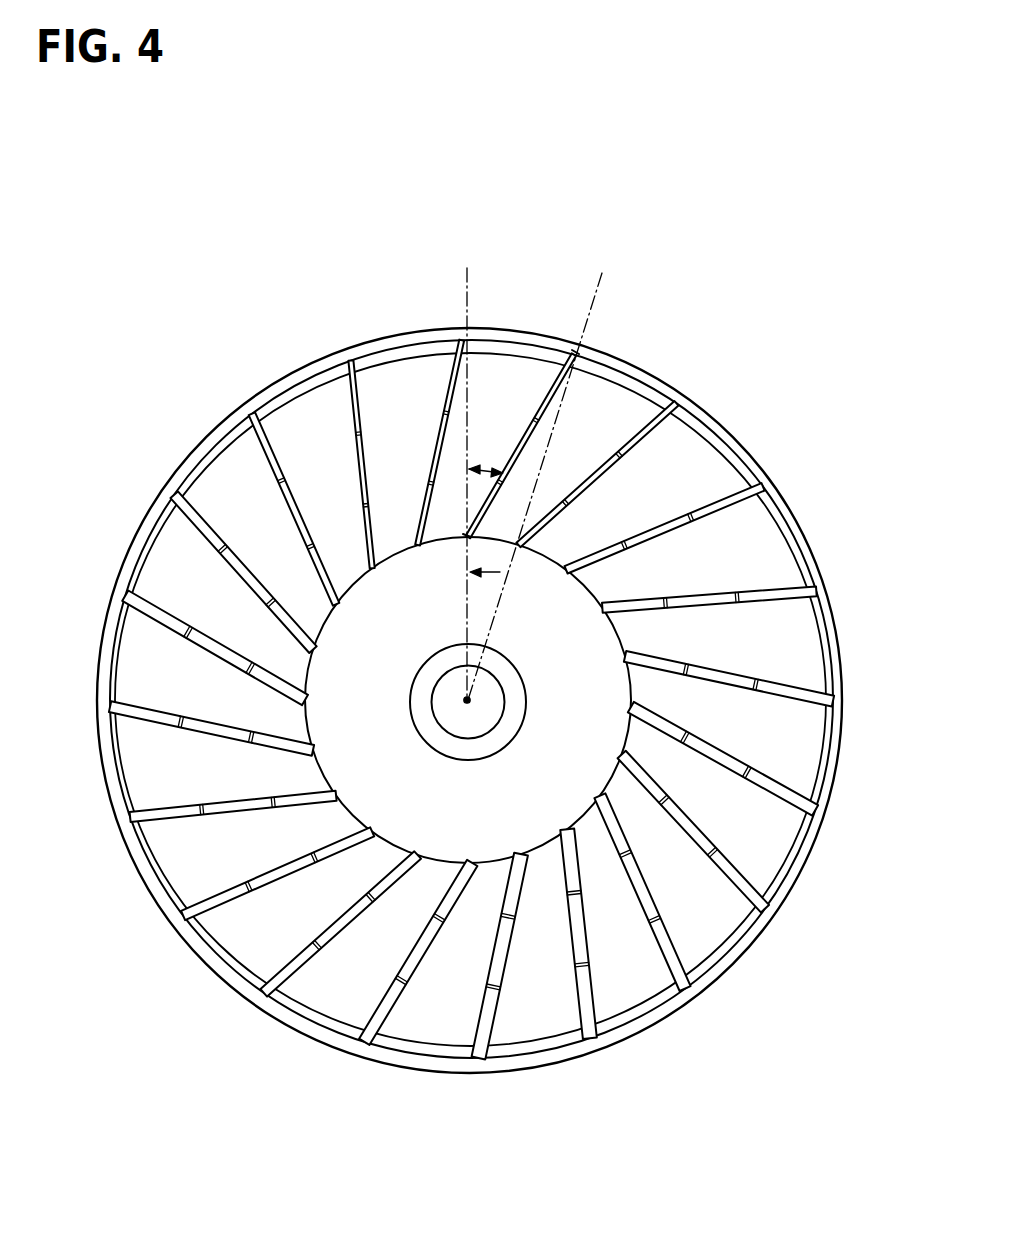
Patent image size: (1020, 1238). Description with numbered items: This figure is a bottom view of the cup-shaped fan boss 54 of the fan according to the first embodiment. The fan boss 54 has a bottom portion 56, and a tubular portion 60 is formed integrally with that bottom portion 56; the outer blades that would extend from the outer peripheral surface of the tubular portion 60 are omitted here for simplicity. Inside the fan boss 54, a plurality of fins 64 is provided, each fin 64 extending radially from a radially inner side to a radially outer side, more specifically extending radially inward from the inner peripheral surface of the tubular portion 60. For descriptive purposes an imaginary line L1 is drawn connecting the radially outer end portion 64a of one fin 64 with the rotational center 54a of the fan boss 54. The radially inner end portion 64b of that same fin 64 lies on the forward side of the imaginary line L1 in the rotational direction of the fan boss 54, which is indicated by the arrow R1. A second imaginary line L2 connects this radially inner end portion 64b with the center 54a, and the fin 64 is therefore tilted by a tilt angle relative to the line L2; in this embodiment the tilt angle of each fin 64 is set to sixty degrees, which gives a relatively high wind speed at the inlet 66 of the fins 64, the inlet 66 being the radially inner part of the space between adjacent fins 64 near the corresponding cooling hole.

The fan boss 54 is at (227, 414).
The rotational center 54a is at (466, 704).
The bottom portion 56 is at (693, 468).
The tubular portion 60 is at (717, 418).
The fin 64 is at (586, 377).
The radially outer end portion 64a is at (578, 356).
The radially inner end portion 64b is at (464, 534).
The inlet 66 is at (502, 522).
The imaginary line L1 is at (583, 322).
The imaginary line L2 is at (462, 320).
The rotational direction R1 is at (482, 572).